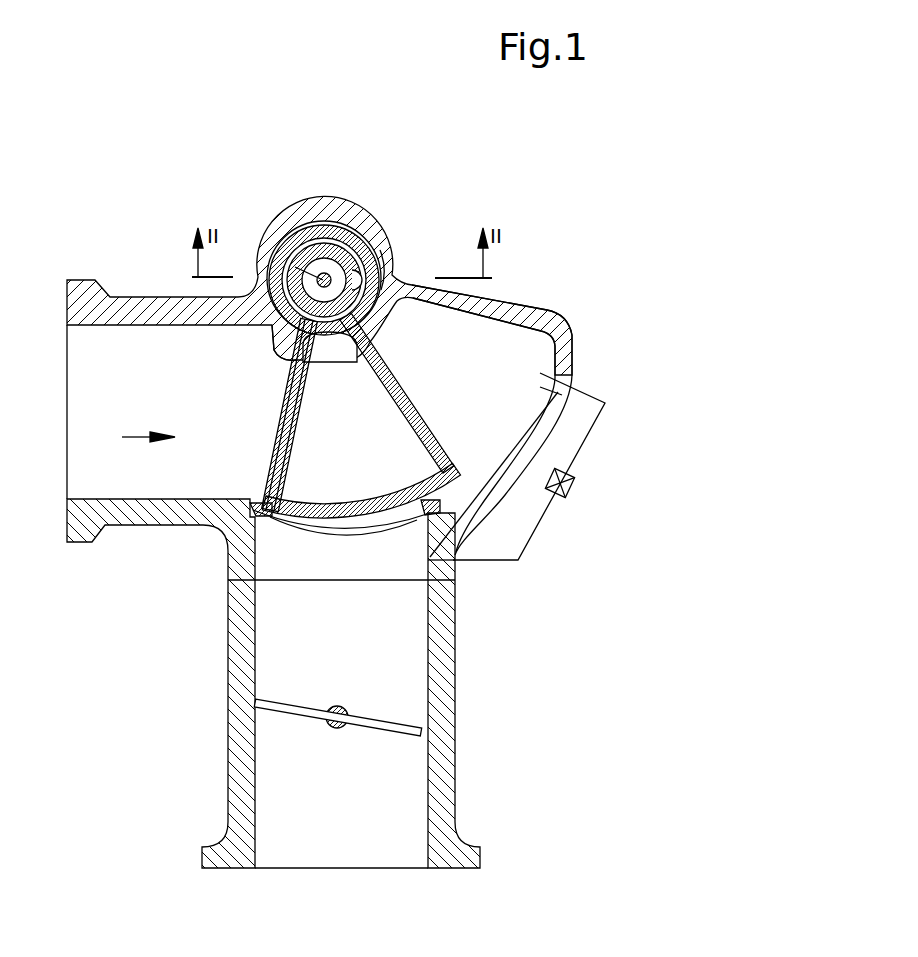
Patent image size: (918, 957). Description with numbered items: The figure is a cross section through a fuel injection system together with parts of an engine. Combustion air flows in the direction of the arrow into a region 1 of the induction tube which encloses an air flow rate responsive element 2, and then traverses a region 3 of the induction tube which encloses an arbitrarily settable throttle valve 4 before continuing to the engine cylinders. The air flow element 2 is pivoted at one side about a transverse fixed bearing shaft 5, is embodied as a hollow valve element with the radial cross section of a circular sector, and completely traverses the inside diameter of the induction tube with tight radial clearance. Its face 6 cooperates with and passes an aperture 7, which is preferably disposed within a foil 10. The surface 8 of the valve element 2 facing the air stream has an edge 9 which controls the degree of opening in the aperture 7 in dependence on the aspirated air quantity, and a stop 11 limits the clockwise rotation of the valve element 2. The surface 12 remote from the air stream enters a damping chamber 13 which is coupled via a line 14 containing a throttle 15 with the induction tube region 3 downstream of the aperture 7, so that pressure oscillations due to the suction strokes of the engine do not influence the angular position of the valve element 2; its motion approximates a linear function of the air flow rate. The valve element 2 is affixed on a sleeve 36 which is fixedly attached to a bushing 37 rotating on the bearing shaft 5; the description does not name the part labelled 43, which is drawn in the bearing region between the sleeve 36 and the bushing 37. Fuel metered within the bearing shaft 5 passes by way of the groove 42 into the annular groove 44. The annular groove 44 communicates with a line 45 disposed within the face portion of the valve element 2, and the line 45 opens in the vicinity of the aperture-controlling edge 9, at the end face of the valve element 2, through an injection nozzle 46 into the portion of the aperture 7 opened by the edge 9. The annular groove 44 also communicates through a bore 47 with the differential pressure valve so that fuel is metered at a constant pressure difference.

The region of the induction tube 1 is at (155, 482).
The air flow rate responsive element 2 is at (415, 425).
The region of the induction tube 3 is at (408, 653).
The throttle valve 4 is at (387, 725).
The bearing shaft 5 is at (268, 220).
The face of the valve element 6 is at (338, 527).
The aperture 7 is at (298, 523).
The surface of the valve element facing the air stream 8 is at (277, 421).
The edge 9 is at (257, 497).
The foil 10 is at (423, 517).
The stop 11 is at (275, 347).
The surface of the valve element remote from the air stream 12 is at (394, 378).
The damping chamber 13 is at (508, 339).
The line 14 is at (528, 542).
The throttle 15 is at (573, 477).
The sleeve 36 is at (288, 220).
The bushing 37 is at (300, 232).
The groove 42 is at (420, 235).
The hub 43 is at (355, 235).
The annular groove 44 is at (327, 263).
The line 45 is at (307, 420).
The injection nozzle 46 is at (273, 517).
The bore 47 is at (325, 330).